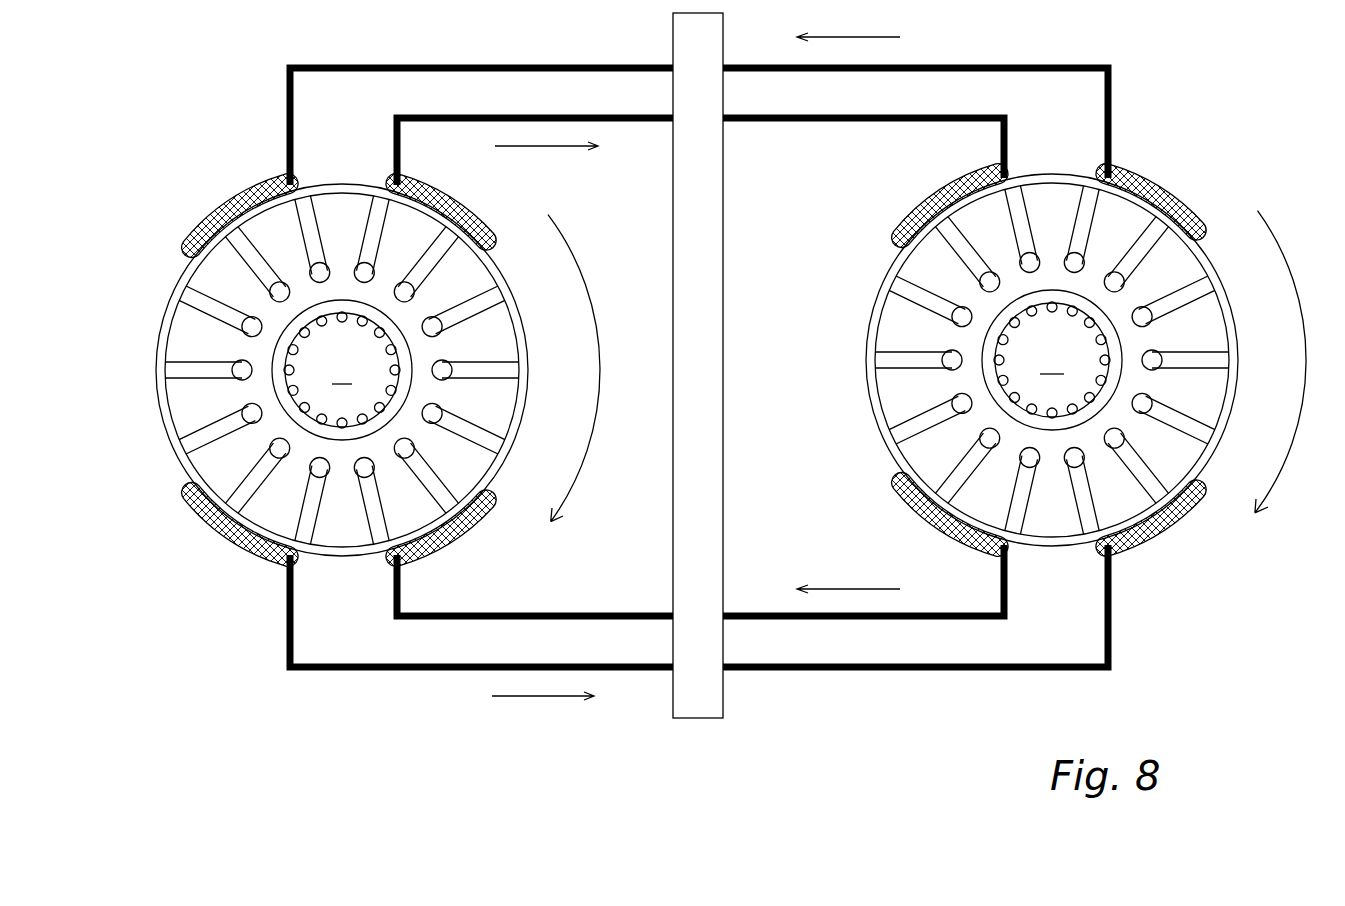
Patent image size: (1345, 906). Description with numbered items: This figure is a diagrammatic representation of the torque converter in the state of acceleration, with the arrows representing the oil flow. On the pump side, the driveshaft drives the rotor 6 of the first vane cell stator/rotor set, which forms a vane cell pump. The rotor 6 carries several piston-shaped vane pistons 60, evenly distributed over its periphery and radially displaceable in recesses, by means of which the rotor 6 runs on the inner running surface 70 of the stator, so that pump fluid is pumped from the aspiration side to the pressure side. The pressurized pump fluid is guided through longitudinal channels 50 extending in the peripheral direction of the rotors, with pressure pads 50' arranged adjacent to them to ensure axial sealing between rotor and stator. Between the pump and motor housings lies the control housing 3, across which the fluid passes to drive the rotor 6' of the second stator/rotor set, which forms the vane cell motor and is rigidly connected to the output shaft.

The control housing 3 is at (709, 366).
The rotor 6 is at (361, 348).
The rotor 6' is at (1072, 352).
The longitudinal channel 50 is at (441, 208).
The pressure pad 50' is at (1155, 194).
The vane piston 60 is at (463, 317).
The inner running surface 70 is at (342, 343).